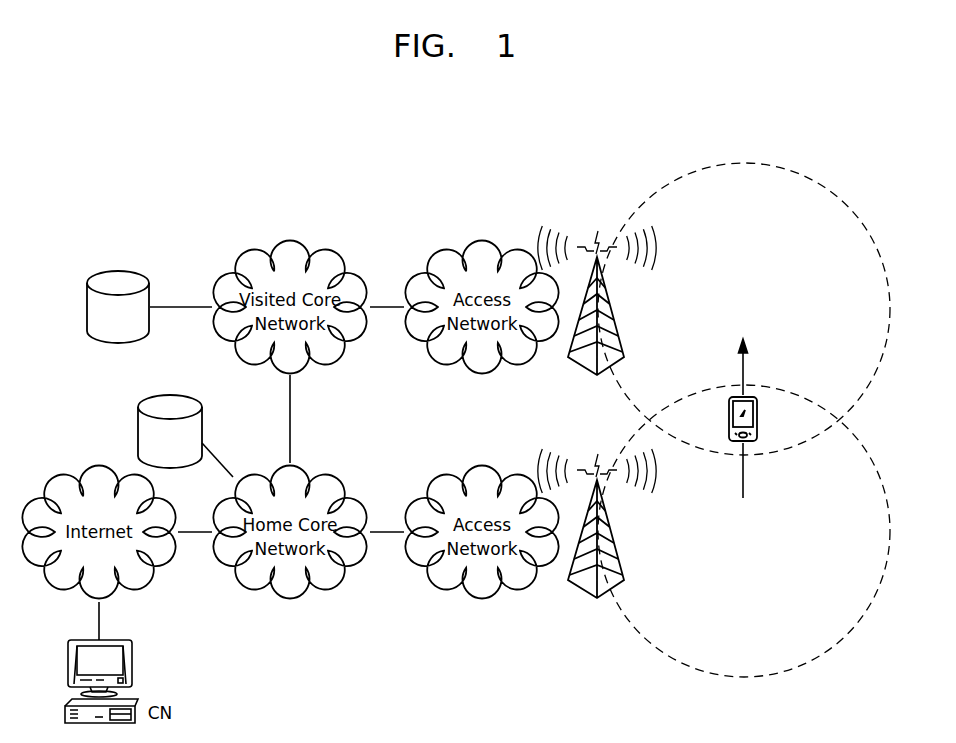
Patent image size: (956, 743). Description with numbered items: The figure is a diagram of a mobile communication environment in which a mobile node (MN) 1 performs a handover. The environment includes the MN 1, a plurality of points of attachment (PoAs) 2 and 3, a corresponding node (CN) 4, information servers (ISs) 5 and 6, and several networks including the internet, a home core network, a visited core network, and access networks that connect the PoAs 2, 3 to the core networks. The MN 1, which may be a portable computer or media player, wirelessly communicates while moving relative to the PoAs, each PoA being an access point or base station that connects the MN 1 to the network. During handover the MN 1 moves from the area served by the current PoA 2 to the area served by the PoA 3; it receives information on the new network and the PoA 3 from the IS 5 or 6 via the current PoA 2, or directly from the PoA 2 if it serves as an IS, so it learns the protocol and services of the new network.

The mobile node (MN) 1 is at (758, 424).
The point of attachment (PoA) 2 is at (624, 546).
The point of attachment (PoA) 3 is at (624, 322).
The corresponding node (CN) 4 is at (133, 665).
The information server (IS) 5 is at (170, 394).
The information server (IS) 6 is at (118, 270).